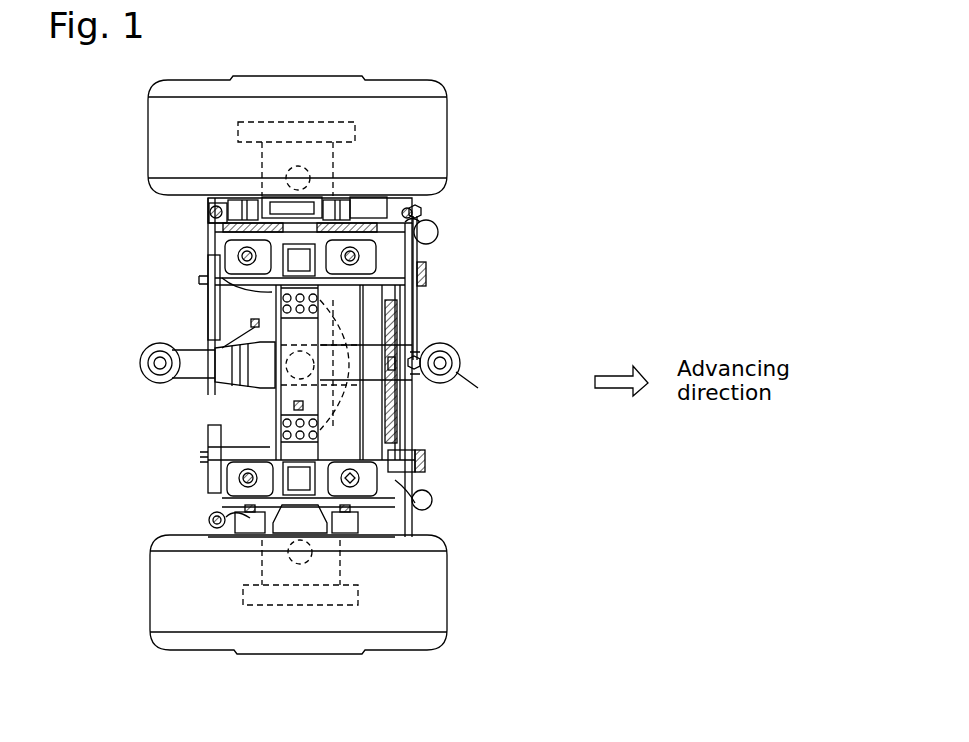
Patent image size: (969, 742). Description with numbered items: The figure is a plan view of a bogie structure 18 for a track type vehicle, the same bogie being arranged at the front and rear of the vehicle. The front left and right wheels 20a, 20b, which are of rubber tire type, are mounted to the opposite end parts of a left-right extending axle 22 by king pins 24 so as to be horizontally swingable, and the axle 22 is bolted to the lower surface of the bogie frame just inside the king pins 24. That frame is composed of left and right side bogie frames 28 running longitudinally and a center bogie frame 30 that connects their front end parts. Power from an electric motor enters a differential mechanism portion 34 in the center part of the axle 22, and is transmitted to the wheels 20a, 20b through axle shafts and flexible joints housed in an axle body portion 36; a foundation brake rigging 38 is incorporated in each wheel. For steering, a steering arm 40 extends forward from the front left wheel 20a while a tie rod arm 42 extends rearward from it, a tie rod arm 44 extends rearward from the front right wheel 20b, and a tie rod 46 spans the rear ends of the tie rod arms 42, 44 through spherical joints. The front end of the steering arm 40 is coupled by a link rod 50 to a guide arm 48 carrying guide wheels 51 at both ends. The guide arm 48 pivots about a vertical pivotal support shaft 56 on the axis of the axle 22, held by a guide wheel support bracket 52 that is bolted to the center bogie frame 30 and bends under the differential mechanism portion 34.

The bogie structure 18 is at (572, 143).
The front left wheel 20a is at (432, 96).
The front right wheel 20b is at (430, 622).
The axle 22 is at (280, 458).
The king pin 24 is at (313, 176).
The side bogie frame 28 is at (378, 222).
The center bogie frame 30 is at (380, 413).
The differential mechanism portion 34 is at (250, 323).
The axle body portion 36 is at (220, 275).
The foundation brake rigging 38 is at (350, 125).
The steering arm 40 is at (380, 200).
The tie rod arm 42 is at (228, 204).
The tie rod arm 44 is at (238, 536).
The tie rod 46 is at (205, 262).
The guide arm 48 is at (445, 342).
The link rod 50 is at (420, 300).
The guide wheel 51 is at (148, 355).
The guide wheel support bracket 52 is at (432, 238).
The pivotal support shaft 56 is at (270, 405).